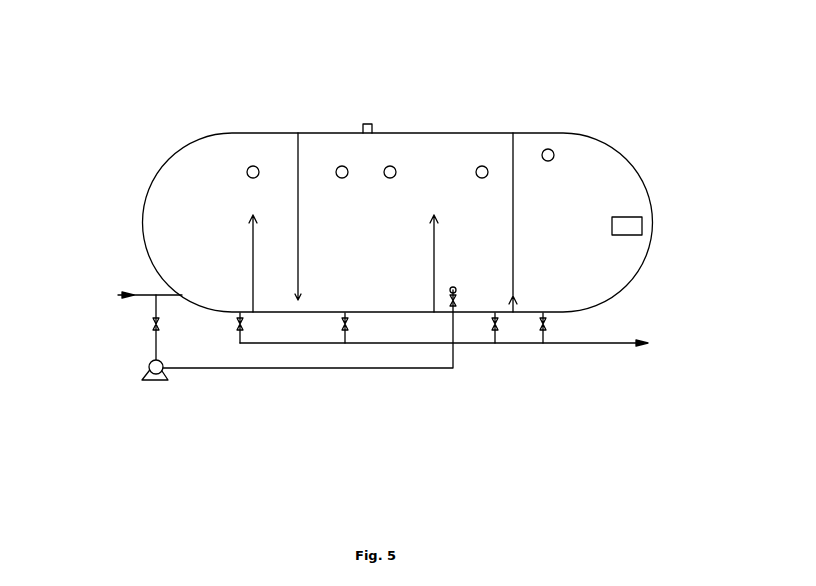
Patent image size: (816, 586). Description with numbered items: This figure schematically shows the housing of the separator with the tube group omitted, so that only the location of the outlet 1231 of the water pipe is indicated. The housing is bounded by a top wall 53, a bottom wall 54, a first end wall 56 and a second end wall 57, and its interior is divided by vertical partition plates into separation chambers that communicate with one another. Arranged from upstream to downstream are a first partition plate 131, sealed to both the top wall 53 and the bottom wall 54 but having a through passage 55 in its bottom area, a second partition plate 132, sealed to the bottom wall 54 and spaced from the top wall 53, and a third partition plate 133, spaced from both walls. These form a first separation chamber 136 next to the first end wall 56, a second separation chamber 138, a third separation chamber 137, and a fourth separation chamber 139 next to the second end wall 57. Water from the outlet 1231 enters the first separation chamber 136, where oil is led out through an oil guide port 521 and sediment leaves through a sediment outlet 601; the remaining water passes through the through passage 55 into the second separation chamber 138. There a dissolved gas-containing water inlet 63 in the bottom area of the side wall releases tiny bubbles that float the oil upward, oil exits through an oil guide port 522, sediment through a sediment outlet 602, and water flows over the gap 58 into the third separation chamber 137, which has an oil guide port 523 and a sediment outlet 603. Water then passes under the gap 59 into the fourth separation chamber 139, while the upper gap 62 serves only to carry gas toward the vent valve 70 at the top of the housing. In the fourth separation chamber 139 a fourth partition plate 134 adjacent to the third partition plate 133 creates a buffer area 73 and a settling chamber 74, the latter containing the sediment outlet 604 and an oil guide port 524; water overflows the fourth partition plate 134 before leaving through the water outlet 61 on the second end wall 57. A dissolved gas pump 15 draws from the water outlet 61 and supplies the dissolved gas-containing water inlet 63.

The top wall 53 is at (255, 132).
The second end wall 57 is at (143, 203).
The fourth separation chamber 139 is at (187, 210).
The first end wall 56 is at (625, 158).
The first separation chamber 136 is at (573, 285).
The gap 58 is at (433, 182).
The vent valve 70 is at (366, 123).
The oil guide port 524 is at (250, 167).
The oil guide port 523 is at (344, 166).
The oil guide port 522 is at (483, 166).
The oil guide port 521 is at (553, 151).
The outlet 1231 is at (625, 226).
The third partition plate 133 is at (298, 205).
The gap 62 is at (299, 132).
The first partition plate 131 is at (515, 167).
The fourth partition plate 134 is at (253, 233).
The second partition plate 132 is at (433, 227).
The water outlet 61 is at (143, 296).
The dissolved gas pump 15 is at (149, 371).
The sediment outlet 604 is at (242, 314).
The sediment outlet 603 is at (346, 320).
The sediment outlet 602 is at (497, 315).
The sediment outlet 601 is at (548, 315).
The dissolved gas-containing water inlet 63 is at (455, 313).
The settling chamber 74 is at (223, 280).
The buffer area 73 is at (270, 272).
The gap 59 is at (298, 311).
The third separation chamber 137 is at (367, 278).
The bottom wall 54 is at (407, 313).
The second separation chamber 138 is at (468, 280).
The through passage 55 is at (523, 315).